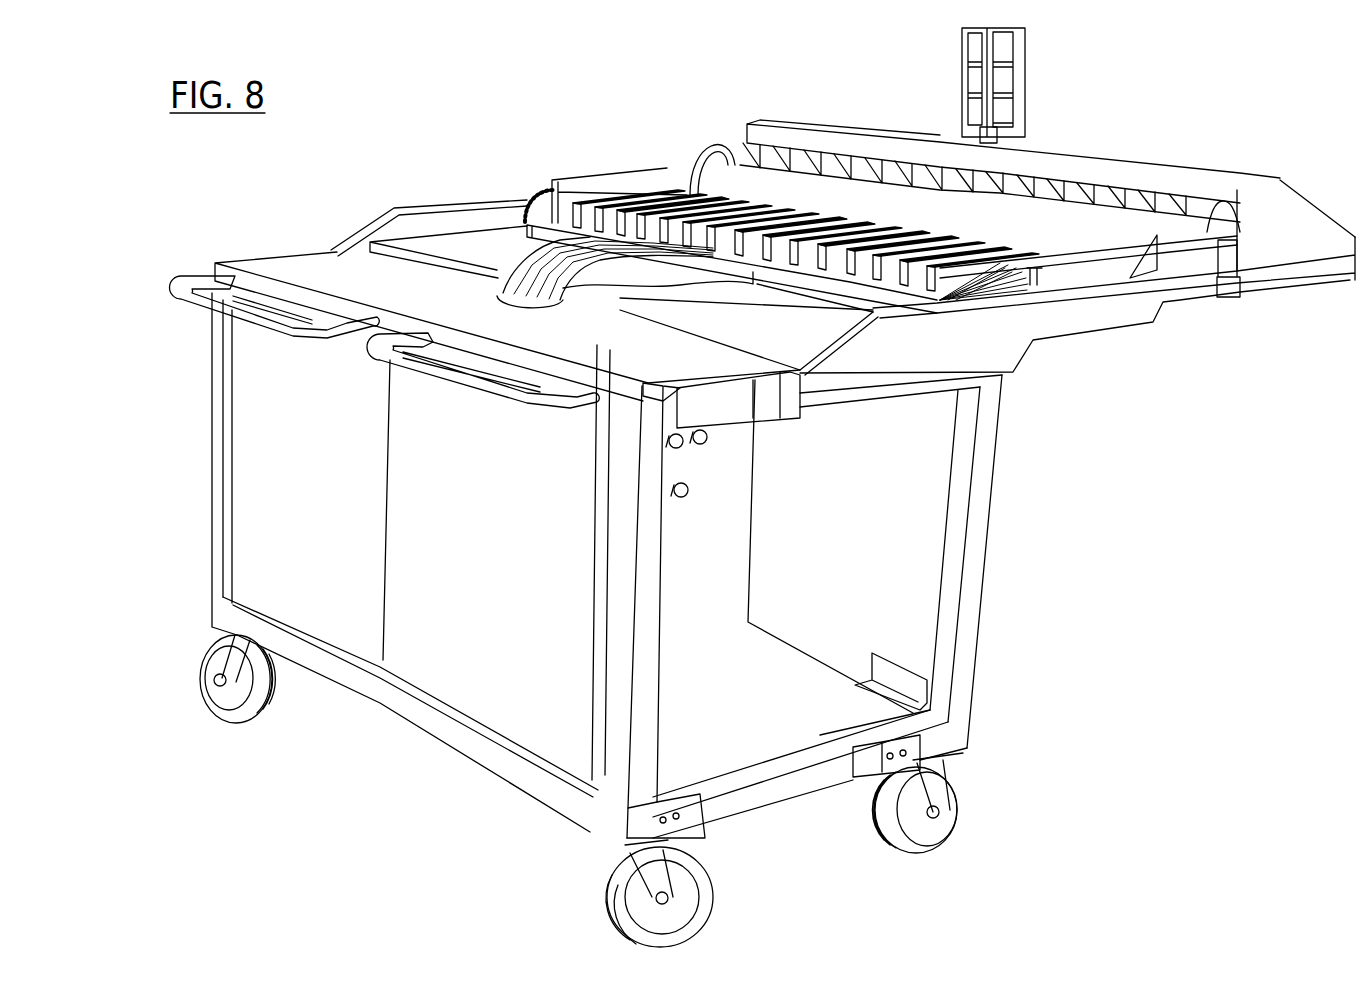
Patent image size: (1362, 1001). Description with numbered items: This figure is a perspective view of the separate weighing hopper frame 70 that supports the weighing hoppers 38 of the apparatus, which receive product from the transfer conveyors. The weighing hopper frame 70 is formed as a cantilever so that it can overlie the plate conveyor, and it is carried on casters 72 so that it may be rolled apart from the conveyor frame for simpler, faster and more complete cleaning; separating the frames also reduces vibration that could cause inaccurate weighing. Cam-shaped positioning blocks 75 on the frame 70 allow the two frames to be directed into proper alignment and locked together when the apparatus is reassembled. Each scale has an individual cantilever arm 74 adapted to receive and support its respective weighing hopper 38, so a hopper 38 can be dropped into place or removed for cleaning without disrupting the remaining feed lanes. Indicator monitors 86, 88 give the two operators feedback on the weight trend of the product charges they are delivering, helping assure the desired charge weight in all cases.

The weighing hopper 38 is at (795, 163).
The weighing hopper frame 70 is at (975, 537).
The caster 72 is at (250, 713).
The cantilever arm 74 is at (958, 275).
The cam-shaped positioning block 75 is at (683, 812).
The indicator monitor 86 is at (947, 56).
The indicator monitor 88 is at (1034, 28).